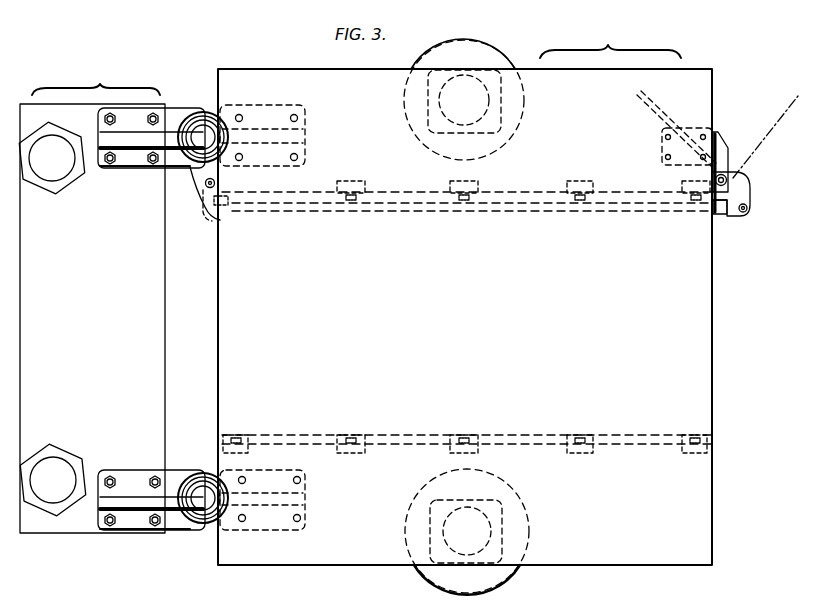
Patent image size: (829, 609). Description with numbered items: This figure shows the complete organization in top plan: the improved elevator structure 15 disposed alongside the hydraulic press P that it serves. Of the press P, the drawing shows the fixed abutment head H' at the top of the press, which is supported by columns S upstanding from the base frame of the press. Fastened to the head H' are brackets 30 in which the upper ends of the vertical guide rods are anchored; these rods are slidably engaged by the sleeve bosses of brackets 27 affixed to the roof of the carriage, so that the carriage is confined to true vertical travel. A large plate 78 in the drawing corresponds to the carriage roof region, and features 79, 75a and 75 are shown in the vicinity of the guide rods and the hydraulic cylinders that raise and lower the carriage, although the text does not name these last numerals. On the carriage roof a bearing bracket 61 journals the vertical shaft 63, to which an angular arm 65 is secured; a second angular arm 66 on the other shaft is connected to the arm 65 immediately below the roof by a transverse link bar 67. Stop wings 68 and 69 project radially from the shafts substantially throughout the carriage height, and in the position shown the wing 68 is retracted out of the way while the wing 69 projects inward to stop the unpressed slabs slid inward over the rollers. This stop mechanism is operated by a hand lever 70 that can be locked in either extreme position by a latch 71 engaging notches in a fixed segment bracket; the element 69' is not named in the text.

The panel plate 78 is at (465, 317).
The fixed abutment head H' is at (92, 318).
The columns S is at (60, 172).
The hydraulic press P is at (96, 79).
The brackets 30 is at (172, 112).
The bearing 79 is at (203, 134).
The bearing bracket 61 is at (290, 106).
The upper pivot 75a is at (500, 100).
The lower pivot 75 is at (498, 532).
The elevator structure 15 is at (610, 42).
The hand lever 70 is at (236, 190).
The latch 71 is at (256, 197).
The transverse link bar 67 is at (517, 212).
The vertical shaft 63 is at (204, 184).
The angular arm 65 is at (208, 216).
The stop wing 68 is at (203, 204).
The angular arm 66 is at (750, 194).
The stop wing 69 is at (757, 141).
The latch pin 69' is at (760, 190).
The bracket 27 is at (305, 525).